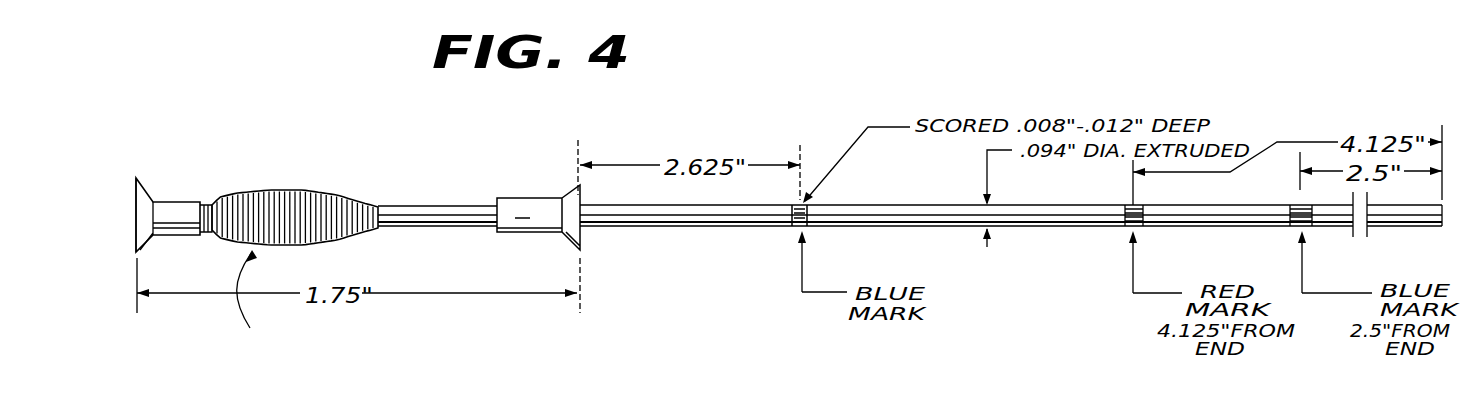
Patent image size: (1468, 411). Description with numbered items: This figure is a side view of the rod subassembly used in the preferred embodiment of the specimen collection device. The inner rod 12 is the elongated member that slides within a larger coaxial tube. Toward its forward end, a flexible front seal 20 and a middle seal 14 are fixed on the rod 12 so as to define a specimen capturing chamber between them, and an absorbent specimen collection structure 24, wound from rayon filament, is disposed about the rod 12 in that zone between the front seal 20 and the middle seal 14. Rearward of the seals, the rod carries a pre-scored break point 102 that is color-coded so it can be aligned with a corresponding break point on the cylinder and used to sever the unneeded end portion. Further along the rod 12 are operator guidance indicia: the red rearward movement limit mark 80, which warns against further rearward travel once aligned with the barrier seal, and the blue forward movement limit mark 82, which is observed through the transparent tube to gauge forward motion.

The inner rod 12 is at (922, 176).
The middle seal 14 is at (528, 201).
The front seal 20 is at (168, 206).
The absorbent specimen collection structure 24 is at (333, 160).
The rearward rod movement limit indicia 80 is at (1121, 235).
The forward movement limit indicia 82 is at (1310, 235).
The pre-scored break point 102 is at (790, 234).